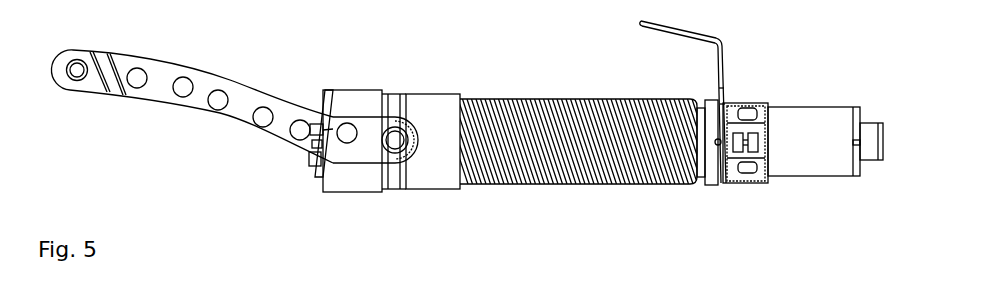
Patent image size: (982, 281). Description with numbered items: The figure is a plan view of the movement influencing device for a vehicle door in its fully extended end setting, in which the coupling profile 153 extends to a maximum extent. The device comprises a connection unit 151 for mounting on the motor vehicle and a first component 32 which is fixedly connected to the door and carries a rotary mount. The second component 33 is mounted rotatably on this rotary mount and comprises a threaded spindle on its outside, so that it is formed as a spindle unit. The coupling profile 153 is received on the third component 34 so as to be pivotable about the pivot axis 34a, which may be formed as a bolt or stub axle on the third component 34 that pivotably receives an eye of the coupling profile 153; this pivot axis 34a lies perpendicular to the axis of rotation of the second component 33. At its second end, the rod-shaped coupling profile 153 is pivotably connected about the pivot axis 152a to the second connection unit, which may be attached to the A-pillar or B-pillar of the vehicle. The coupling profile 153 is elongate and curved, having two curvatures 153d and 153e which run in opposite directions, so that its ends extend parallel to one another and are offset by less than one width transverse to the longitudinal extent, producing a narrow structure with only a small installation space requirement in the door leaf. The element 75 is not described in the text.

The pivot axis 152a is at (79, 66).
The coupling profile 153 is at (210, 80).
The curvature 153d is at (180, 104).
The curvature 153e is at (297, 148).
The connection unit 151 is at (332, 90).
The third component 34 is at (447, 180).
The pivot axis 34a is at (394, 139).
The second component 33 is at (575, 180).
The first component 32 is at (722, 180).
The motor 75 is at (817, 120).